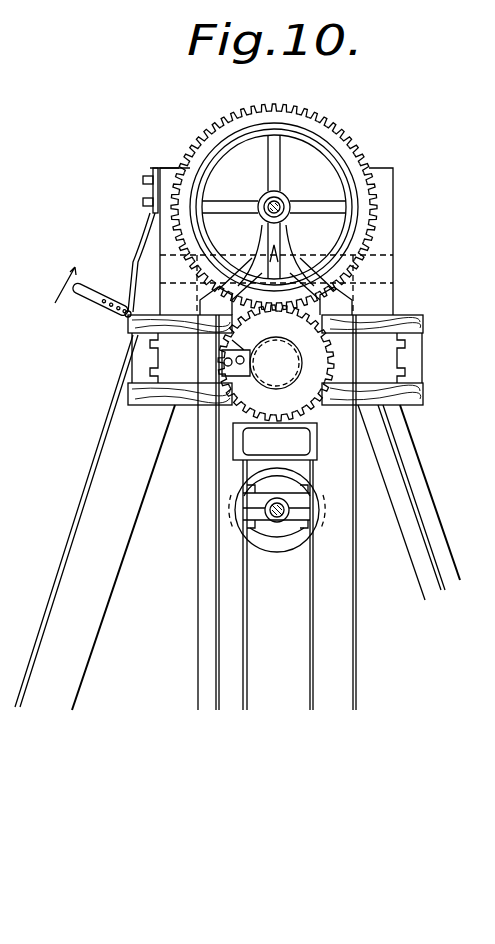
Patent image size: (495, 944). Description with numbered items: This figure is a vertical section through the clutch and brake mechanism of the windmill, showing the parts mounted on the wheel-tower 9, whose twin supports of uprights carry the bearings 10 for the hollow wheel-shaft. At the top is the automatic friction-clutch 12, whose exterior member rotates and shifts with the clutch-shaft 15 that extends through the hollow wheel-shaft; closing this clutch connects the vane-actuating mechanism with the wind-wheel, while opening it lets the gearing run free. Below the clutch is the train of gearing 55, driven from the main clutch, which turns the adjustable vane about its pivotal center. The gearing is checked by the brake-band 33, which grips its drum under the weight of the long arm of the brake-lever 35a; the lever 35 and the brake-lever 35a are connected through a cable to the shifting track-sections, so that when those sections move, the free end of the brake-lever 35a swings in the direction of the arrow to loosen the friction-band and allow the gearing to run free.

The wheel-tower 9 is at (100, 438).
The bearings 10 is at (393, 252).
The automatic friction-clutch 12 is at (245, 176).
The clutch-shaft 15 is at (278, 209).
The brake-band 33 is at (246, 350).
The lever 35 is at (151, 202).
The brake-lever 35a is at (104, 311).
The train of gearing 55 is at (352, 140).